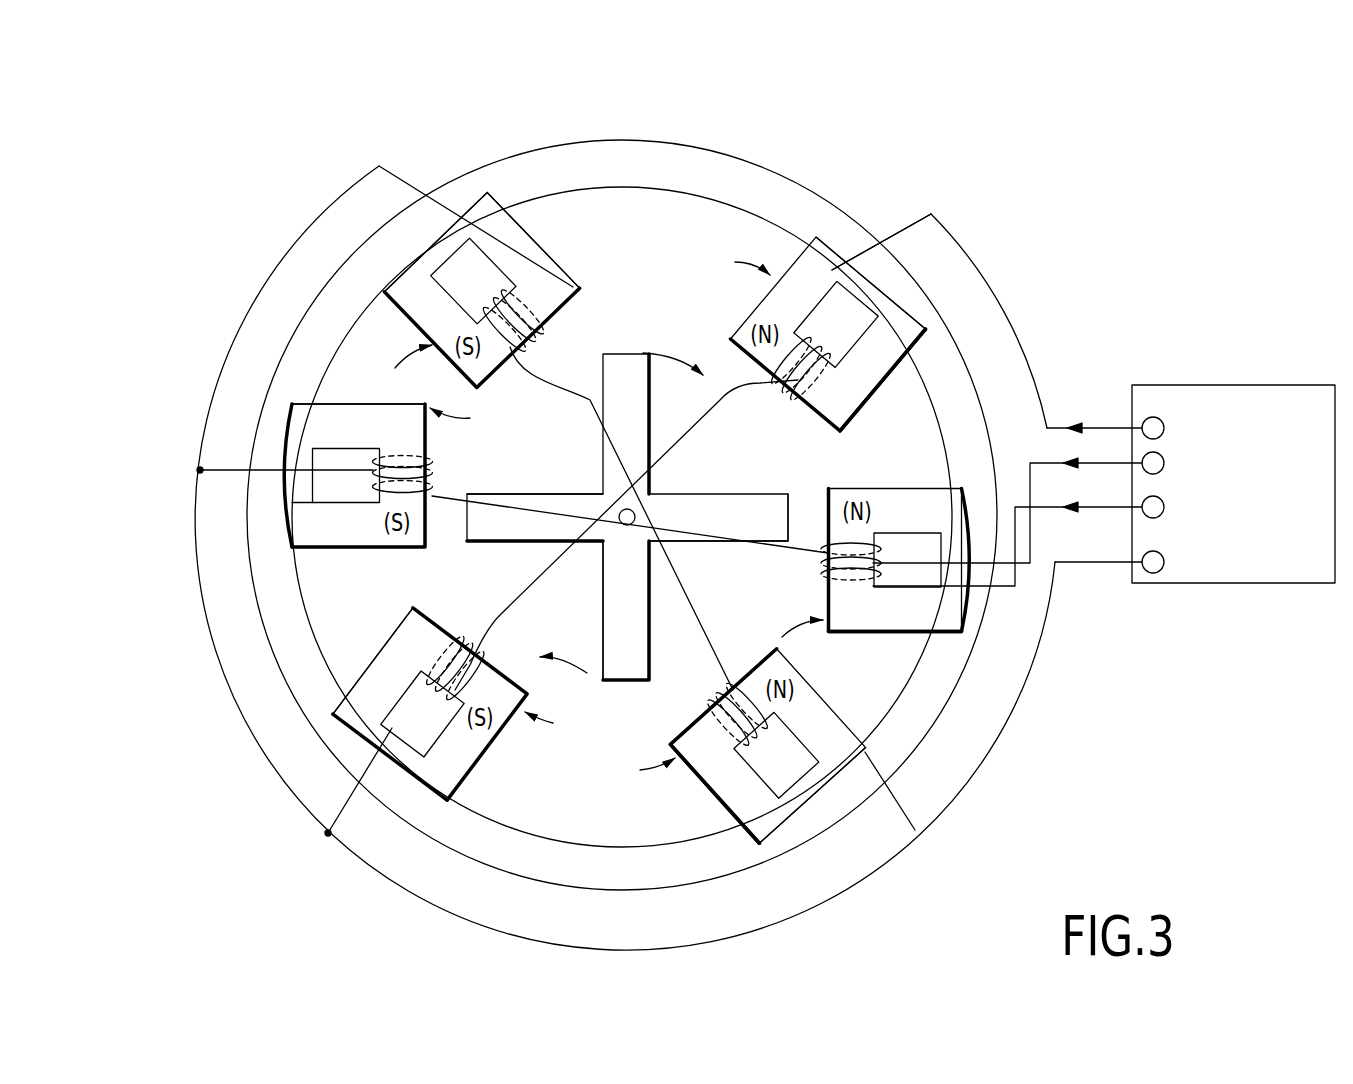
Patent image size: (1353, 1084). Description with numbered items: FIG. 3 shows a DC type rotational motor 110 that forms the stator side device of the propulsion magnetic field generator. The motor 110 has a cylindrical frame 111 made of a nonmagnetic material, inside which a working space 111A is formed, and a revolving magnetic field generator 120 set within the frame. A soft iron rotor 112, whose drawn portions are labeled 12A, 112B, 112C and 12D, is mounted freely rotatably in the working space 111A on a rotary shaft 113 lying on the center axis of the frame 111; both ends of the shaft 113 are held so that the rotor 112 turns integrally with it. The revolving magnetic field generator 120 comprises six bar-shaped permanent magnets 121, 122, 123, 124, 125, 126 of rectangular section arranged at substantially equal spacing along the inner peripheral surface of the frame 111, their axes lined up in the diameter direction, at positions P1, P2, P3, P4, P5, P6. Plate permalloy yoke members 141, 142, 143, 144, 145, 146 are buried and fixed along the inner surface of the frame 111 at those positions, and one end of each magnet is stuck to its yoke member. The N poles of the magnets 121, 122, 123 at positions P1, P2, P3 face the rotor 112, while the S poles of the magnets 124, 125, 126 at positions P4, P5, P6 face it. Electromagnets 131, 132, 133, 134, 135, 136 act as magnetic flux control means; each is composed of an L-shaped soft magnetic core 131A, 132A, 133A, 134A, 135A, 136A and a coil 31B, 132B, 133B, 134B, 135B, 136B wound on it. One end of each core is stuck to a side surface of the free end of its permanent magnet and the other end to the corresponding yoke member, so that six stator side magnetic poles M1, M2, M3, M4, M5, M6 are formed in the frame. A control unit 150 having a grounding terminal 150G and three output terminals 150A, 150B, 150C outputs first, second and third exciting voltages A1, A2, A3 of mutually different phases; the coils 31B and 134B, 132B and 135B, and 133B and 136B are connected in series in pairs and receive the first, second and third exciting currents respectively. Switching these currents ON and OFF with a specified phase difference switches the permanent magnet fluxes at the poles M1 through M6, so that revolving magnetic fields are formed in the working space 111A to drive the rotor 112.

The rotational motor 110 is at (1010, 140).
The cylindrical frame 111 is at (632, 143).
The working space 111A is at (585, 273).
The rotor 112 is at (627, 350).
The rotor arm 12A is at (652, 345).
The rotor arm 112B is at (767, 525).
The rotor arm 112C is at (620, 645).
The rotor arm 12D is at (495, 502).
The rotary shaft 113 is at (637, 512).
The revolving magnetic field generator 120 is at (430, 868).
The permanent magnet 121 is at (817, 272).
The permanent magnet 122 is at (903, 490).
The permanent magnet 123 is at (822, 705).
The permanent magnet 124 is at (458, 762).
The permanent magnet 125 is at (335, 547).
The permanent magnet 126 is at (420, 293).
The electromagnet 131 is at (880, 347).
The L-shaped magnetic core 131A is at (885, 393).
The coil 31B is at (790, 400).
The electromagnet 132 is at (880, 623).
The L-shaped magnetic core 132A is at (935, 640).
The coil 132B is at (825, 560).
The electromagnet 133 is at (763, 817).
The L-shaped magnetic core 133A is at (705, 790).
The coil 133B is at (710, 692).
The electromagnet 134 is at (345, 690).
The L-shaped magnetic core 134A is at (378, 655).
The coil 134B is at (460, 640).
The electromagnet 135 is at (343, 430).
The L-shaped magnetic core 135A is at (363, 404).
The coil 135B is at (432, 460).
The electromagnet 136 is at (465, 200).
The L-shaped magnetic core 136A is at (573, 287).
The coil 136B is at (515, 345).
The yoke member 141 is at (885, 280).
The yoke member 142 is at (963, 470).
The yoke member 143 is at (905, 785).
The yoke member 144 is at (397, 763).
The yoke member 145 is at (300, 540).
The yoke member 146 is at (480, 232).
The control unit 150 is at (1255, 385).
The output terminal 150A is at (1186, 428).
The output terminal 150B is at (1186, 463).
The output terminal 150C is at (1186, 507).
The grounding terminal 150G is at (1143, 562).
The stator side magnetic pole M1 is at (732, 262).
The stator side magnetic pole M2 is at (783, 637).
The stator side magnetic pole M3 is at (637, 768).
The stator side magnetic pole M4 is at (558, 723).
The stator side magnetic pole M5 is at (469, 418).
The stator side magnetic pole M6 is at (398, 370).
The position P1 is at (892, 246).
The position P2 is at (1018, 445).
The position P3 is at (888, 804).
The position P4 is at (315, 775).
The position P5 is at (222, 498).
The position P6 is at (372, 215).
The first exciting voltage A1 is at (1094, 414).
The second exciting voltage A2 is at (1007, 498).
The third exciting voltage A3 is at (1007, 531).